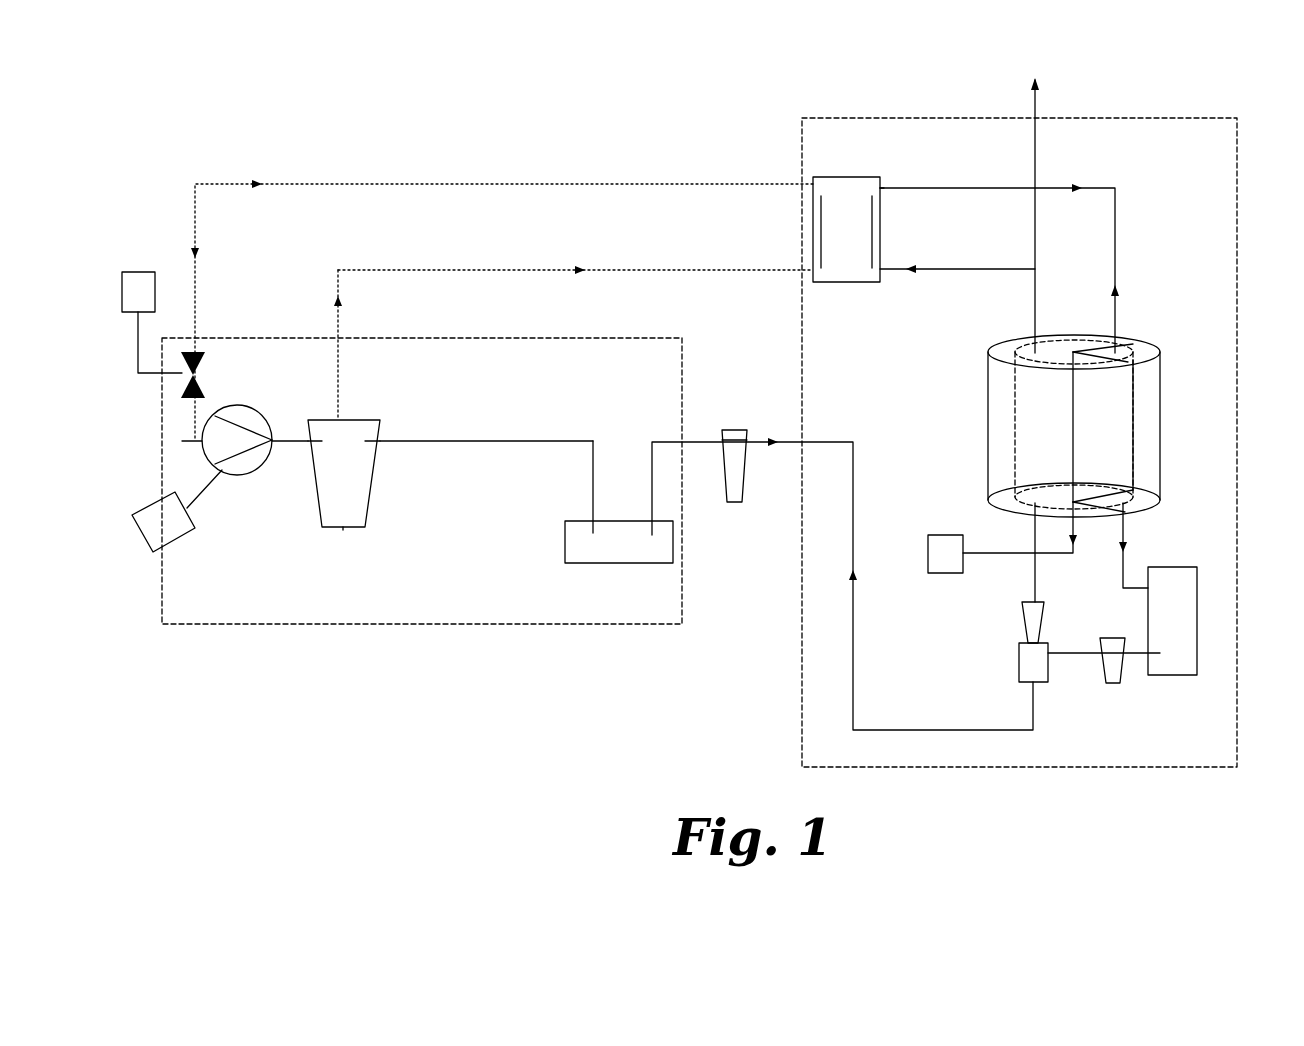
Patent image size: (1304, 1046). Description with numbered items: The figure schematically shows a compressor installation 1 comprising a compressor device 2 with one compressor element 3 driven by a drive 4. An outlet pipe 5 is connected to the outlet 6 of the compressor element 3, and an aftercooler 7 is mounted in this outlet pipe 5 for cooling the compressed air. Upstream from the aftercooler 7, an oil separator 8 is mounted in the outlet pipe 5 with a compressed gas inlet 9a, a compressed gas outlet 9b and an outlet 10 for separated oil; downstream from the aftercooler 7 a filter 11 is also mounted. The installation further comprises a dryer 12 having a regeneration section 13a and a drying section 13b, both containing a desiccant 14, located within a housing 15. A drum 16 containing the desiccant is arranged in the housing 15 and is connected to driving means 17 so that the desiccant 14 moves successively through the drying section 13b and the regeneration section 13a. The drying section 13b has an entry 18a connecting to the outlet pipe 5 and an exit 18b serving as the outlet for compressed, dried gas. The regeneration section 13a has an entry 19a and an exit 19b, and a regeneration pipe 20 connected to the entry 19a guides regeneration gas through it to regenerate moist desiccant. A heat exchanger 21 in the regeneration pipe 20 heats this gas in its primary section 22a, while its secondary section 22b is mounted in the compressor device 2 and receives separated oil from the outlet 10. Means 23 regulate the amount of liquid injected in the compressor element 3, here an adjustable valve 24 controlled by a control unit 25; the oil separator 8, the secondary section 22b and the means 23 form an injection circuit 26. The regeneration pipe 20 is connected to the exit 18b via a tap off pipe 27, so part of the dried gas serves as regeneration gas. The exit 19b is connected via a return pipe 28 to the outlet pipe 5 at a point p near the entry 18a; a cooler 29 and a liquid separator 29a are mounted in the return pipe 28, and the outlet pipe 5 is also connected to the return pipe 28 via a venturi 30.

The compressor installation 1 is at (285, 103).
The compressor device 2 is at (455, 624).
The compressor element 3 is at (262, 468).
The drive 4 is at (180, 530).
The outlet pipe 5 is at (425, 442).
The outlet 6 is at (280, 440).
The aftercooler 7 is at (594, 564).
The oil separator 8 is at (343, 530).
The compressed gas inlet 9a is at (308, 440).
The compressed gas outlet 9b is at (378, 440).
The outlet for separated oil 10 is at (345, 420).
The filter 11 is at (733, 503).
The dryer 12 is at (945, 767).
The regeneration section 13a is at (1148, 392).
The drying section 13b is at (1033, 400).
The desiccant 14 is at (1047, 424).
The housing 15 is at (1160, 455).
The drum 16 is at (1015, 422).
The driving means 17 is at (936, 572).
The entry 18a is at (1030, 498).
The exit 18b is at (1012, 345).
The entry 19a is at (1118, 346).
The exit 19b is at (1120, 500).
The regeneration pipe 20 is at (978, 188).
The heat exchanger 21 is at (852, 177).
The primary section 22a is at (878, 196).
The secondary section 22b is at (813, 185).
The means to regulate the amount of liquid injected 23 is at (228, 365).
The adjustable valve 24 is at (202, 370).
The control unit 25 is at (132, 293).
The injection circuit 26 is at (228, 175).
The tap off pipe 27 is at (935, 270).
The return pipe 28 is at (1140, 588).
The cooler 29 is at (1197, 608).
The liquid separator 29a is at (1118, 684).
The venturi 30 is at (1019, 670).
The point p is at (1040, 665).